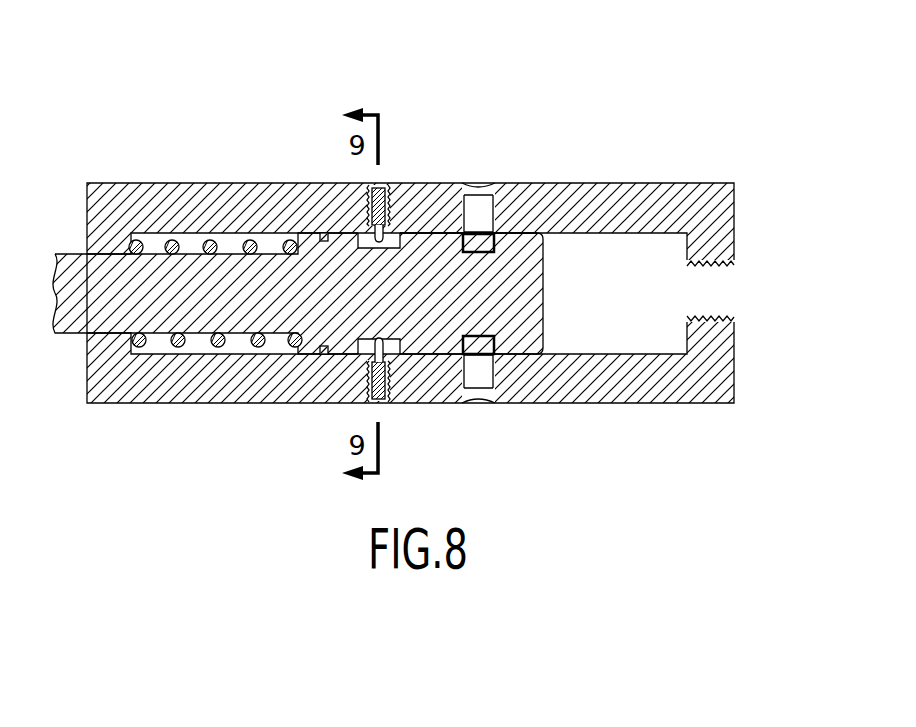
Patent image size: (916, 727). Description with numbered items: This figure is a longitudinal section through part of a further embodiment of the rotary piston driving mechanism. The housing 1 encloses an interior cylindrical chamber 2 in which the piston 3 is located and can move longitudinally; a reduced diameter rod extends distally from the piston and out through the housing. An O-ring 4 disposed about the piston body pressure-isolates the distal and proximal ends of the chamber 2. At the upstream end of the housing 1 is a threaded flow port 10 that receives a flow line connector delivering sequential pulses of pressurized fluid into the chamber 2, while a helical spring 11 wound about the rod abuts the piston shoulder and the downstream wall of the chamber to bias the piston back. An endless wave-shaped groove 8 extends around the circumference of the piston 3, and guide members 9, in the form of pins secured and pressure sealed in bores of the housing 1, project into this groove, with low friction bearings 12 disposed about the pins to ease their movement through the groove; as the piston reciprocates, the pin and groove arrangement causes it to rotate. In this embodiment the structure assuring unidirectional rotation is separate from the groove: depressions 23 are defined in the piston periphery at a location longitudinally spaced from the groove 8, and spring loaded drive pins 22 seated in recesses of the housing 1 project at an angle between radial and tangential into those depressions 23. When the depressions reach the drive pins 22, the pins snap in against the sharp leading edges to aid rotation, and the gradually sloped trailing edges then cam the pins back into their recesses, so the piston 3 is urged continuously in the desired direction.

The housing 1 is at (615, 205).
The interior cylindrical chamber 2 is at (645, 250).
The piston 3 is at (348, 270).
The O-ring 4 is at (316, 236).
The endless wave-shaped groove 8 is at (472, 343).
The guide members 9 is at (458, 300).
The flow port 10 is at (717, 285).
The helical spring 11 is at (153, 230).
The low friction bearings 12 is at (476, 205).
The spring loaded drive pins 22 is at (396, 345).
The depressions 23 is at (400, 242).